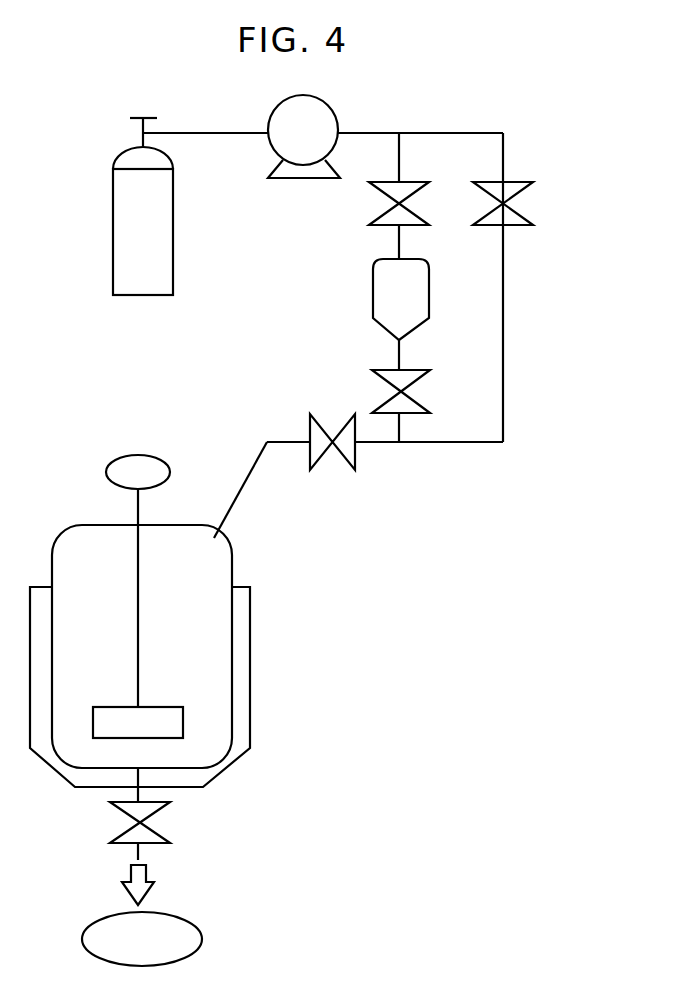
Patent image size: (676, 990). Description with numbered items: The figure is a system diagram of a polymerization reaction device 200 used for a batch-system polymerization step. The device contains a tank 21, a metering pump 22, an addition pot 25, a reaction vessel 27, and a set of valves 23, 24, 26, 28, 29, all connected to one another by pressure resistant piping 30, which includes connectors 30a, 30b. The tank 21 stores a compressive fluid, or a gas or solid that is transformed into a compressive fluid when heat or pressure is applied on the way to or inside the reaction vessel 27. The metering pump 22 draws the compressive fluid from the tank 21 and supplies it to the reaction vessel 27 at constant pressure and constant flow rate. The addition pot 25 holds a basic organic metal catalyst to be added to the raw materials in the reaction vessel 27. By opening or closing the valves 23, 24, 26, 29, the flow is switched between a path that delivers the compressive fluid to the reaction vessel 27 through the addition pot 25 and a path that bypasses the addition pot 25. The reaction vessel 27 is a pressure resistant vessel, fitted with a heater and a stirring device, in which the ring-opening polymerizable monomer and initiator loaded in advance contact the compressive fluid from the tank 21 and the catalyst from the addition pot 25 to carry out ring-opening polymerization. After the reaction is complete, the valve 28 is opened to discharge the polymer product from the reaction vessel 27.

The polymerization reaction device 200 is at (318, 578).
The tank 21 is at (113, 215).
The metering pump 22 is at (336, 116).
The valve 23 is at (516, 182).
The valve 24 is at (380, 228).
The addition pot 25 is at (429, 301).
The valve 26 is at (345, 466).
The reaction vessel 27 is at (82, 525).
The valve 28 is at (156, 810).
The valve 29 is at (428, 372).
The pressure resistant piping 30 is at (267, 442).
The connector 30a is at (399, 133).
The connector 30b is at (405, 444).